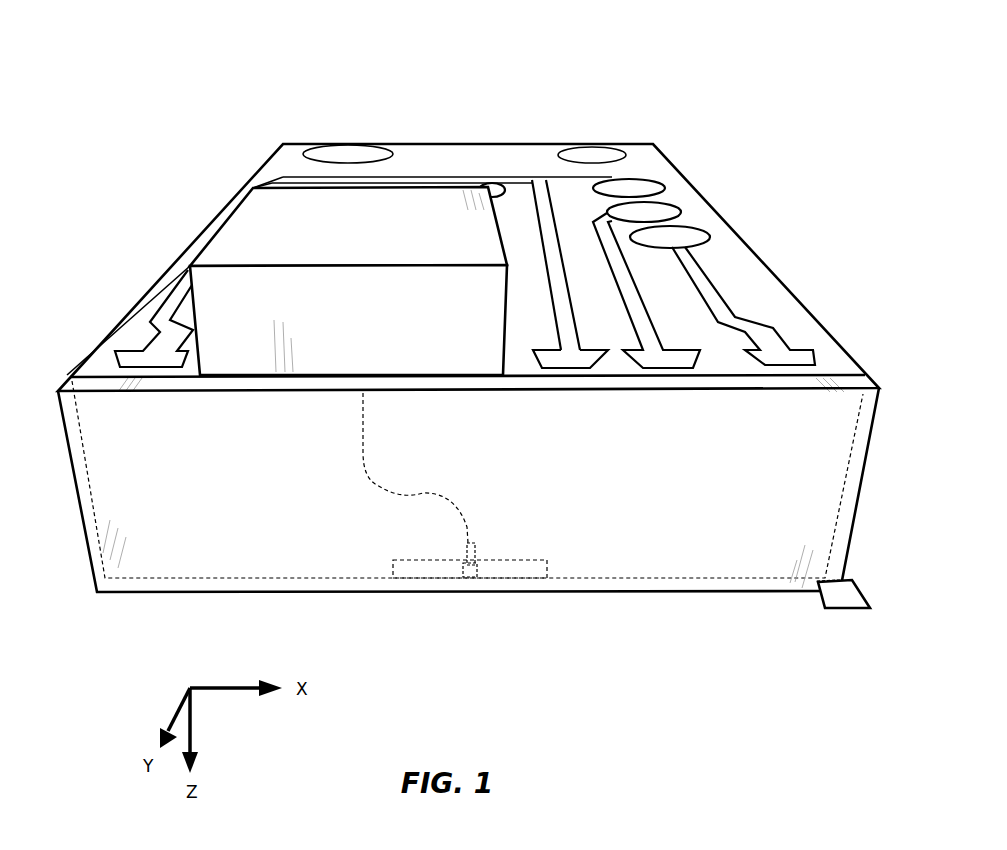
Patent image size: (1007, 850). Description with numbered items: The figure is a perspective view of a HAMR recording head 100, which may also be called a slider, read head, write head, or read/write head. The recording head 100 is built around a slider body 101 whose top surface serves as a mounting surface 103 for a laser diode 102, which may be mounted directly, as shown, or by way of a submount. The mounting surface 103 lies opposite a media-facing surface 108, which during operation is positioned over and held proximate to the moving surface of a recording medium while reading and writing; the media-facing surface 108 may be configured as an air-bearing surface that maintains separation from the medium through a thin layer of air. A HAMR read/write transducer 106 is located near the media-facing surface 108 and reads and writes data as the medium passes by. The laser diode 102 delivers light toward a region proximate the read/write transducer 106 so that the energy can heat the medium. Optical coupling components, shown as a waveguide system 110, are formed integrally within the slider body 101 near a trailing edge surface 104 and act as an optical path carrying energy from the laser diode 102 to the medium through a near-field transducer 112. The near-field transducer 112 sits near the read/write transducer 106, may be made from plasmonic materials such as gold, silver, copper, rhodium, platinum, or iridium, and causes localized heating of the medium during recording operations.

The HAMR recording head 100 is at (455, 365).
The slider body 101 is at (253, 173).
The laser diode 102 is at (423, 187).
The mounting surface 103 is at (128, 333).
The trailing edge surface 104 is at (163, 567).
The read/write transducer 106 is at (477, 580).
The media-facing surface 108 is at (862, 612).
The waveguide system 110 is at (377, 485).
The near-field transducer 112 is at (468, 580).